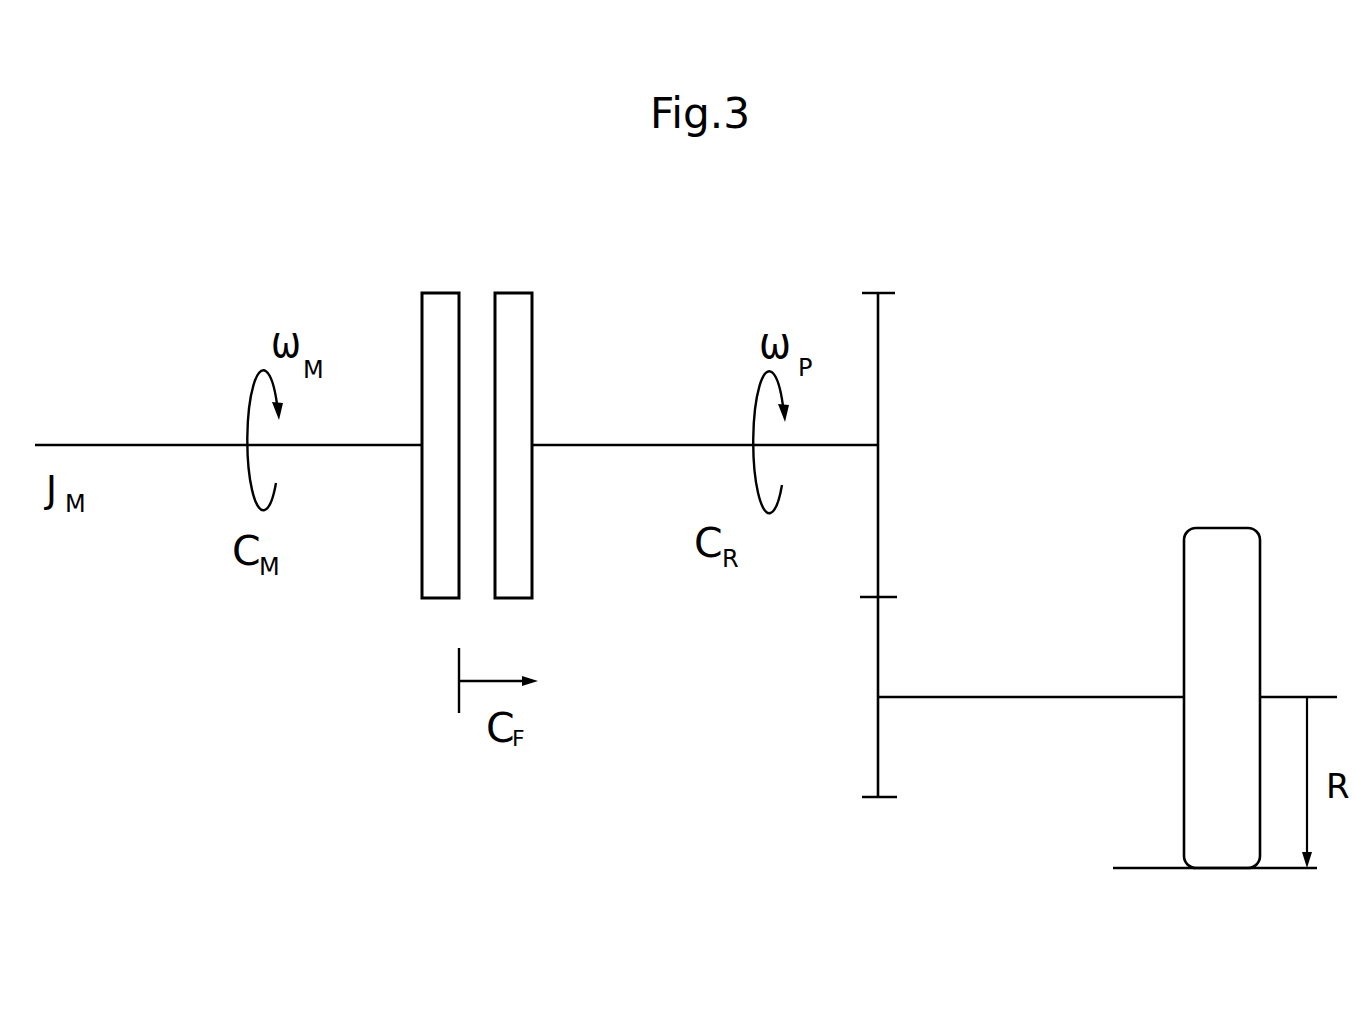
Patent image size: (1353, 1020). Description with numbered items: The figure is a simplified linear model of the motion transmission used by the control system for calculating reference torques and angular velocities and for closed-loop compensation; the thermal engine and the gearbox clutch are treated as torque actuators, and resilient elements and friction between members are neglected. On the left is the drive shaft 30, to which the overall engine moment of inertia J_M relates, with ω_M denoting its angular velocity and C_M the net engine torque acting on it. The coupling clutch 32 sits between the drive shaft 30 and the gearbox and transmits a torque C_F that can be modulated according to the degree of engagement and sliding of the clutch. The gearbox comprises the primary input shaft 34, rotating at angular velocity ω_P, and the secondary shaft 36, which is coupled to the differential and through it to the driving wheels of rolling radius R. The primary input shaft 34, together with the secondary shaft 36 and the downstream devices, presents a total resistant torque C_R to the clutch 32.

The drive shaft 30 is at (148, 445).
The coupling clutch 32 is at (473, 262).
The primary input shaft 34 is at (640, 445).
The secondary shaft 36 is at (1034, 700).